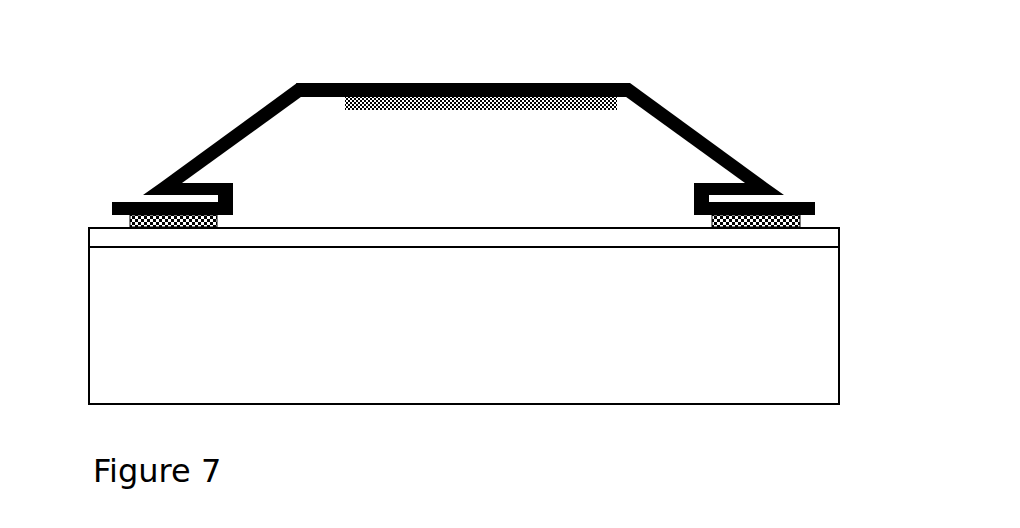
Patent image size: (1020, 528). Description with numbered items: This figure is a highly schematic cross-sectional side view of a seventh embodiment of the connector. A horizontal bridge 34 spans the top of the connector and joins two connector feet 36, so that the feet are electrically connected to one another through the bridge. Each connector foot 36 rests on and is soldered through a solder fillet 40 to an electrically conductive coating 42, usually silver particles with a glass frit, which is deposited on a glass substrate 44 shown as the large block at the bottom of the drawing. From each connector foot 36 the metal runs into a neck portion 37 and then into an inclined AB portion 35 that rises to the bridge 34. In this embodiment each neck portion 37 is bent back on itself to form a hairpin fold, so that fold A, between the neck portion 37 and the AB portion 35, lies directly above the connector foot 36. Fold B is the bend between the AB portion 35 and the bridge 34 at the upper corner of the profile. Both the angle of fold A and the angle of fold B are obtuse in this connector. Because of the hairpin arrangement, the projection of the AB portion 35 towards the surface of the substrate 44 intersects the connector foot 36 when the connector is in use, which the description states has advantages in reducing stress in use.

The bridge 34 is at (391, 83).
The fold B is at (297, 83).
The AB portion 35 is at (205, 150).
The fold A is at (157, 187).
The neck portion 37 is at (223, 191).
The connector foot 36 is at (797, 207).
The solder fillet 40 is at (130, 222).
The electrically conductive coating 42 is at (833, 237).
The glass substrate 44 is at (830, 333).